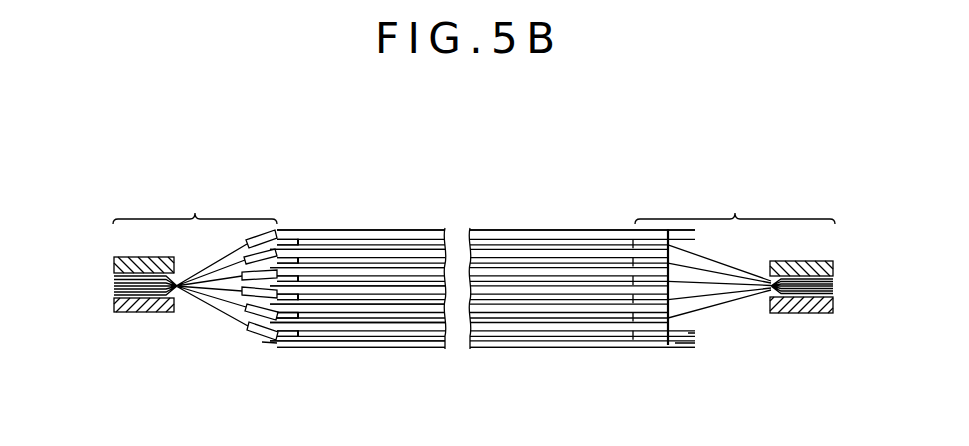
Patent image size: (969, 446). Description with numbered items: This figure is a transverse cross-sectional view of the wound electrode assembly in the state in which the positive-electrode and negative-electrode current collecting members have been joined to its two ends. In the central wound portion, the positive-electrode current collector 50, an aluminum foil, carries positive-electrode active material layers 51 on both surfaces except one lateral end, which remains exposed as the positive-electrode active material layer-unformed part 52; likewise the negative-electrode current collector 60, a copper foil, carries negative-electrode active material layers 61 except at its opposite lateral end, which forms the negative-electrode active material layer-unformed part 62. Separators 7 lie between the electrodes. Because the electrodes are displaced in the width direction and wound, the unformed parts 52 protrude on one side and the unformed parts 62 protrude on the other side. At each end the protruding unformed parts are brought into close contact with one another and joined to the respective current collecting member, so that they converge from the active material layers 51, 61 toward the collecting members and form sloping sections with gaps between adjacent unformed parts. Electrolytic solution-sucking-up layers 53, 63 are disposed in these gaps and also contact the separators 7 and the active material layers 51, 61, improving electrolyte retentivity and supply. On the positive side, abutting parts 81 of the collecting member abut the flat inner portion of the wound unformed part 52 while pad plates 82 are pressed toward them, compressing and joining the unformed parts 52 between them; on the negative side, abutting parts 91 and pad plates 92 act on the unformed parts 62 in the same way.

The separator 7 is at (277, 343).
The positive-electrode current collector 50 is at (416, 232).
The positive-electrode active material layer 51 is at (388, 244).
The positive-electrode active material layer-unformed part 52 is at (735, 256).
The electrolytic solution-sucking-up layer 53 is at (658, 327).
The negative-electrode current collector 60 is at (357, 244).
The negative-electrode active material layer 61 is at (341, 246).
The negative-electrode active material layer-unformed part 62 is at (195, 258).
The electrolytic solution-sucking-up layer 63 is at (253, 335).
The abutting part 81 is at (833, 266).
The pad plate 82 is at (795, 313).
The abutting part 91 is at (113, 262).
The pad plate 92 is at (135, 312).